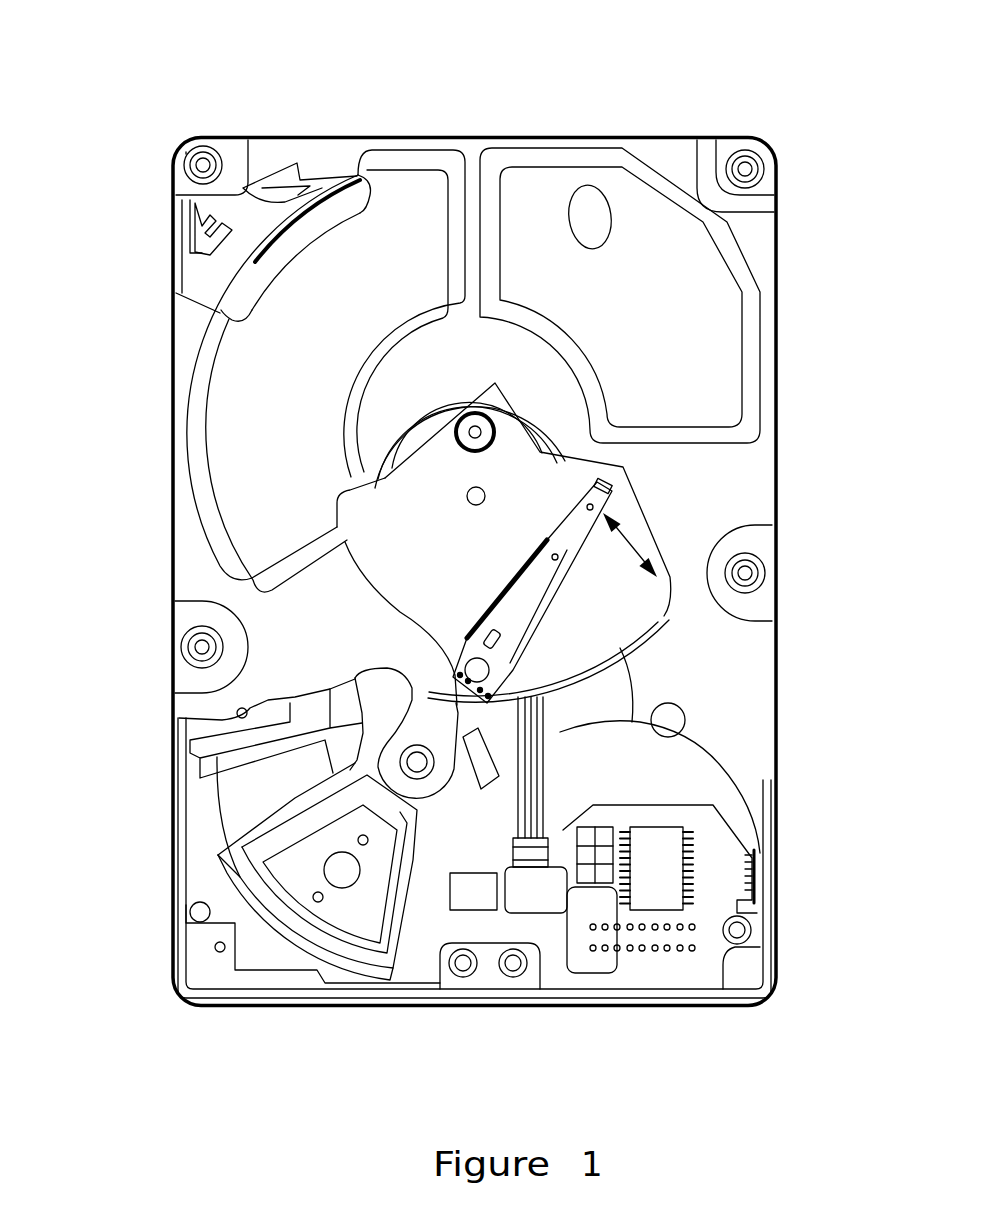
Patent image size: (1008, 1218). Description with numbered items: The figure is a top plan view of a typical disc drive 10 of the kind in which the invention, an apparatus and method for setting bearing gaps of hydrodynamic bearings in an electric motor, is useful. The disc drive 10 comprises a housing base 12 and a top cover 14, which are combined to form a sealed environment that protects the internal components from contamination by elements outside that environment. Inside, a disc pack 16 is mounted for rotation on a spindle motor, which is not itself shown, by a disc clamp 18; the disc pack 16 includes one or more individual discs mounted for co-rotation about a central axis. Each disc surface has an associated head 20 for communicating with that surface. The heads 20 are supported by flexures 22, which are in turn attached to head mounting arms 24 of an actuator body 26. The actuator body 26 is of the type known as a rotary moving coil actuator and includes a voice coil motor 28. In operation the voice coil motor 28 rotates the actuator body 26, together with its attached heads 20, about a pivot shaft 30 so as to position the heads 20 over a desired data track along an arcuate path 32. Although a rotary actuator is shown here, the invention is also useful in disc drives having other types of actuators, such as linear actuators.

The disc drive 10 is at (143, 103).
The housing base 12 is at (778, 836).
The top cover 14 is at (478, 150).
The disc pack 16 is at (628, 637).
The disc clamp 18 is at (506, 450).
The head 20 is at (607, 483).
The flexure 22 is at (530, 595).
The head mounting arm 24 is at (548, 705).
The actuator body 26 is at (383, 715).
The voice coil motor 28 is at (222, 807).
The pivot shaft 30 is at (420, 765).
The arcuate path 32 is at (630, 530).